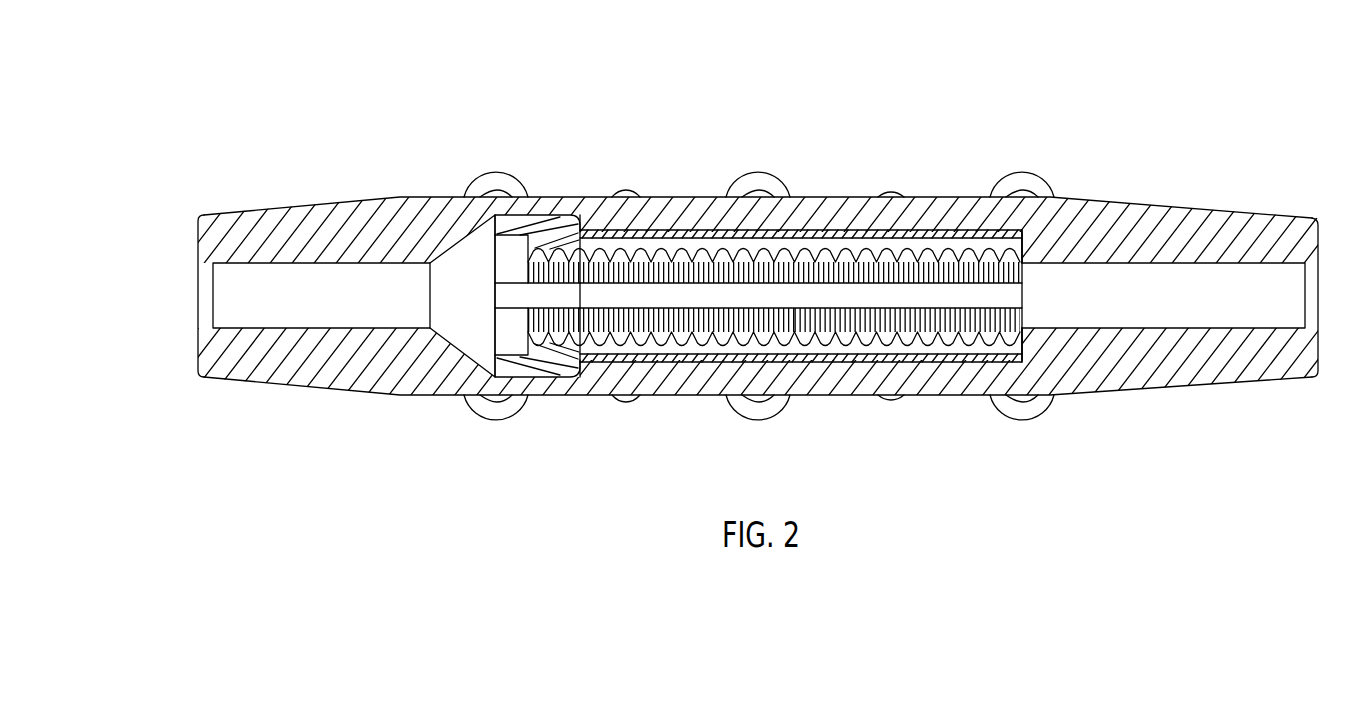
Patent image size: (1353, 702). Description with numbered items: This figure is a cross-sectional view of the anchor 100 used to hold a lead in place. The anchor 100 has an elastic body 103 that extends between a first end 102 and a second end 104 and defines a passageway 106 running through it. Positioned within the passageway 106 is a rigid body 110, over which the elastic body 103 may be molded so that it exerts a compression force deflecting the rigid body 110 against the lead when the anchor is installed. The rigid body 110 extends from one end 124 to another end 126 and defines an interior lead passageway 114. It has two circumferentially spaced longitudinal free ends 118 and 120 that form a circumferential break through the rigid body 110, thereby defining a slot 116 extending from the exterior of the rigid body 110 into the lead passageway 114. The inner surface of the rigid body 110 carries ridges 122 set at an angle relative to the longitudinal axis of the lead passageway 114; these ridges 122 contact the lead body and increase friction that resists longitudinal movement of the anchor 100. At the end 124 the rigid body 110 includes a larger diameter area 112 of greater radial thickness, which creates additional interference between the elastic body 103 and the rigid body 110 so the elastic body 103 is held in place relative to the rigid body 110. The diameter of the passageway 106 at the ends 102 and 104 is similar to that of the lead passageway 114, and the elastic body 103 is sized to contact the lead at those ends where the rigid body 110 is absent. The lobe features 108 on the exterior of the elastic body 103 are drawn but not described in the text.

The anchor 100 is at (935, 88).
The end of the elastic body 102 is at (197, 232).
The elastic body 103 is at (828, 197).
The end of the elastic body 104 is at (1321, 222).
The passageway 106 is at (232, 303).
The lobe 108 is at (765, 170).
The rigid body 110 is at (905, 347).
The larger diameter area 112 is at (549, 362).
The lead passageway 114 is at (510, 297).
The slot 116 is at (647, 303).
The longitudinal free end 118 is at (732, 250).
The longitudinal free end 120 is at (662, 330).
The ridges 122 is at (917, 250).
The end of the rigid body 124 is at (510, 328).
The end of the rigid body 126 is at (1025, 345).